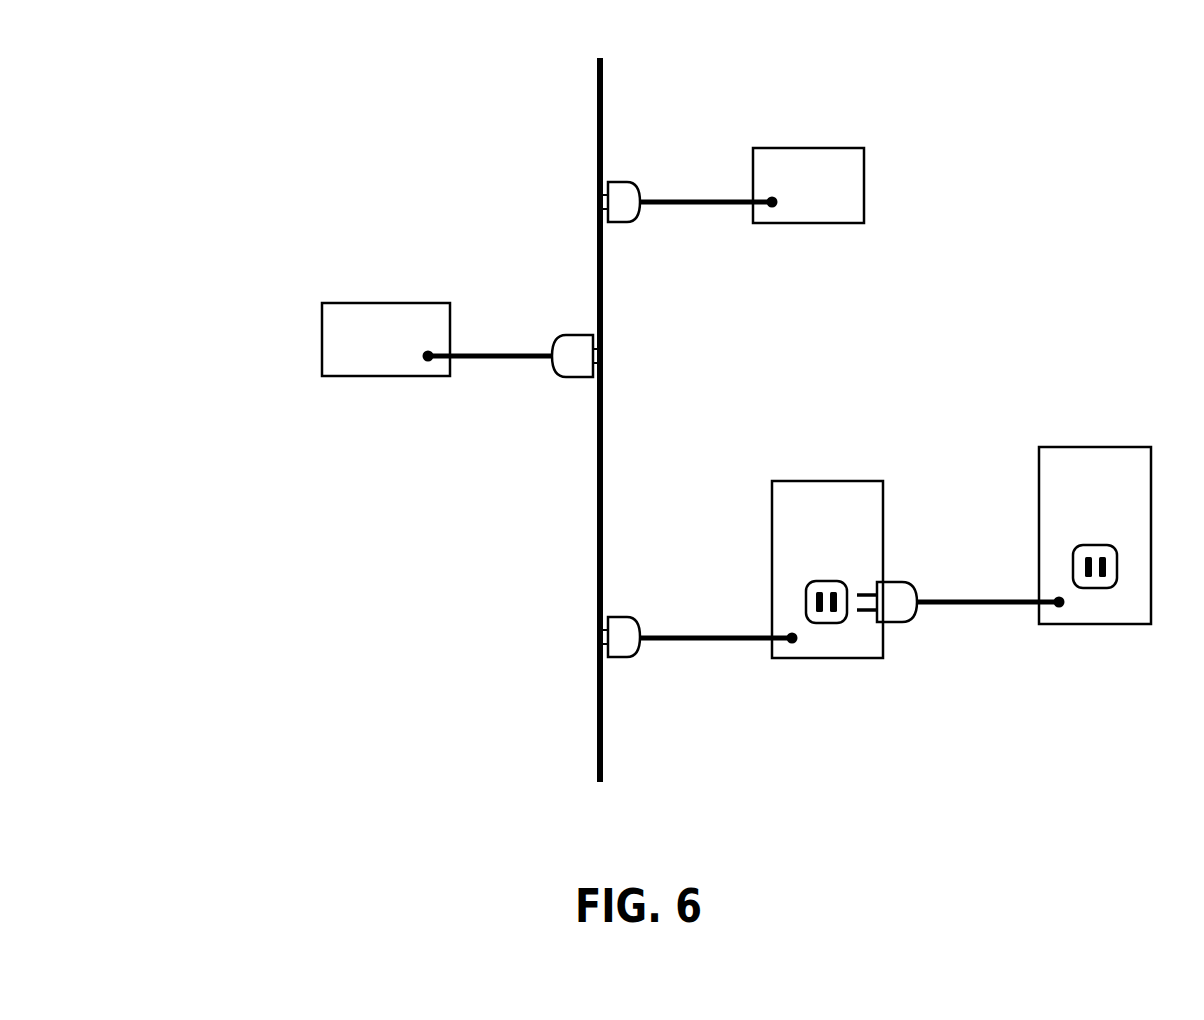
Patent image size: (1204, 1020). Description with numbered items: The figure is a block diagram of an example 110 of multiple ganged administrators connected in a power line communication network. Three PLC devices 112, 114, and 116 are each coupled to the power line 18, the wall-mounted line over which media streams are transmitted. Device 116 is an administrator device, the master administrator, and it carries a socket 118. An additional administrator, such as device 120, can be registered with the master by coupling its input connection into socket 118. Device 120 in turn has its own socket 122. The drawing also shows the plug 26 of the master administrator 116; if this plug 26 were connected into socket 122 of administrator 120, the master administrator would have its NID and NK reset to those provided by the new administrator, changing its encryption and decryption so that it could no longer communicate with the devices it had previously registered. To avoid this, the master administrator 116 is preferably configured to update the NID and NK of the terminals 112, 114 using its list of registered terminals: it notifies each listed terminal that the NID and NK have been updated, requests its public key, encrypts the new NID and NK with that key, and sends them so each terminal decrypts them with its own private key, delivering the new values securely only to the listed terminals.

The example of multiple administrators 110 is at (348, 100).
The power line 18 is at (600, 112).
The plug 26 is at (629, 222).
The PLC device 112 is at (808, 148).
The PLC device 114 is at (321, 350).
The administrator device 116 is at (822, 481).
The socket 118 is at (826, 623).
The administrator device 120 is at (1097, 447).
The socket 122 is at (1090, 588).